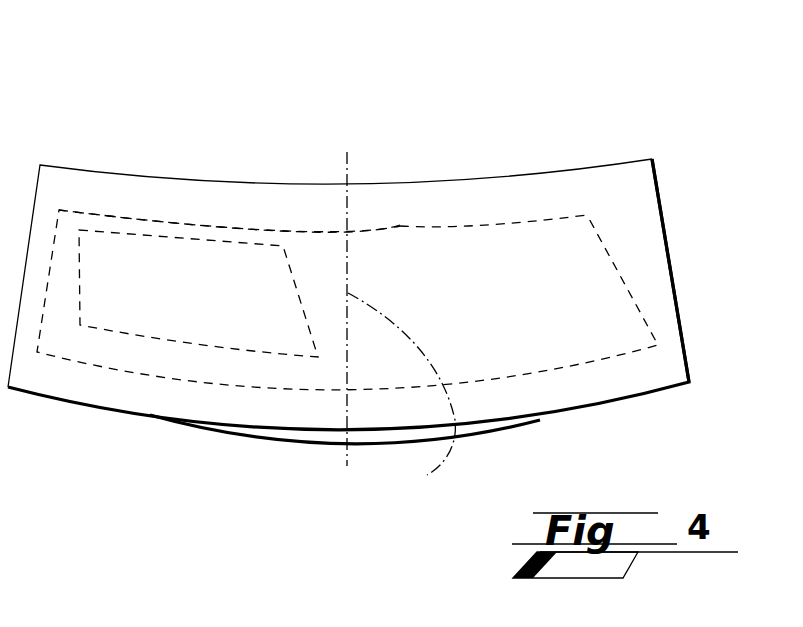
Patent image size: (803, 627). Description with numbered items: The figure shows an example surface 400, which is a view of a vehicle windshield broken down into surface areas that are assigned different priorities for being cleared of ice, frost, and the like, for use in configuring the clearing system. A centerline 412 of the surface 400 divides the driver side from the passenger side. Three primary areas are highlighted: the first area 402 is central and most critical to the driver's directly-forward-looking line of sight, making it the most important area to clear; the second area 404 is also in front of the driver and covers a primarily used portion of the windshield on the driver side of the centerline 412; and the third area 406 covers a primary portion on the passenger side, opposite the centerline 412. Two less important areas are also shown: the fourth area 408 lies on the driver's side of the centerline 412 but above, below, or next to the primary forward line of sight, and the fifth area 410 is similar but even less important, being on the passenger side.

The surface 400 is at (87, 142).
The first area 402 is at (203, 240).
The second area 404 is at (312, 228).
The third area 406 is at (465, 227).
The fourth area 408 is at (231, 413).
The fifth area 410 is at (644, 212).
The centerline 412 is at (401, 324).